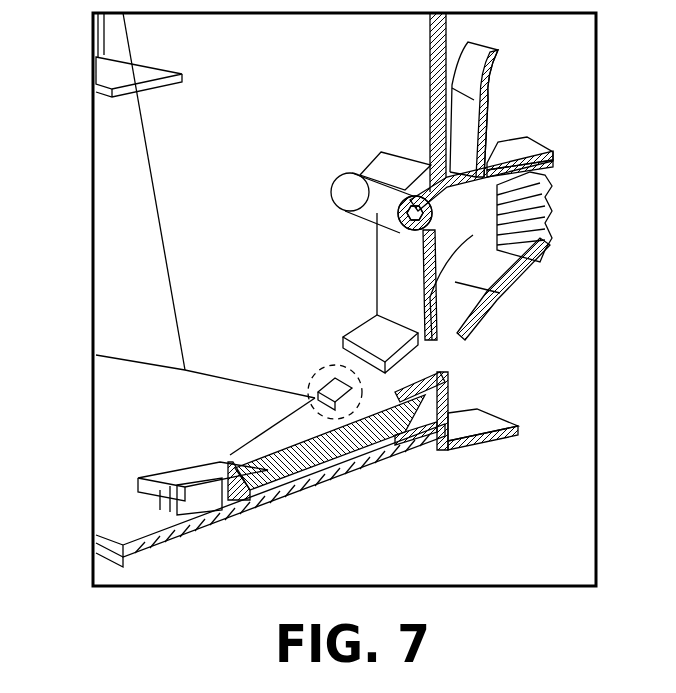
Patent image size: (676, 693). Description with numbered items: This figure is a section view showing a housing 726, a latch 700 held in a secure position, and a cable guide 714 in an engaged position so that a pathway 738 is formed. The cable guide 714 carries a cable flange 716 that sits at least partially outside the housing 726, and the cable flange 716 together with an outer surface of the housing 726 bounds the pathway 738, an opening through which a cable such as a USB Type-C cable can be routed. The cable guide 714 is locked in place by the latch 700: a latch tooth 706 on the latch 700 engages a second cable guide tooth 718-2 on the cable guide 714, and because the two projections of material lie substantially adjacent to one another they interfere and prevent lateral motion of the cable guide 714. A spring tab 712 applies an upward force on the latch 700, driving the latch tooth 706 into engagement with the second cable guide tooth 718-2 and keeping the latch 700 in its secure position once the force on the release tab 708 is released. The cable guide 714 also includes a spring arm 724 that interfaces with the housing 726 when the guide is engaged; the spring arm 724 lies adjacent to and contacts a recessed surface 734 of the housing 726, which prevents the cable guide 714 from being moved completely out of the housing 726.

The latch 700 is at (350, 478).
The latch tooth 706 is at (426, 398).
The release tab 708 is at (481, 425).
The spring tab 712 is at (386, 462).
The cable guide 714 is at (528, 158).
The cable flange 716 is at (521, 283).
The second cable guide tooth 718-2 is at (432, 442).
The spring arm 724 is at (323, 365).
The housing 726 is at (112, 166).
The recessed surface 734 is at (344, 356).
The pathway 738 is at (538, 262).